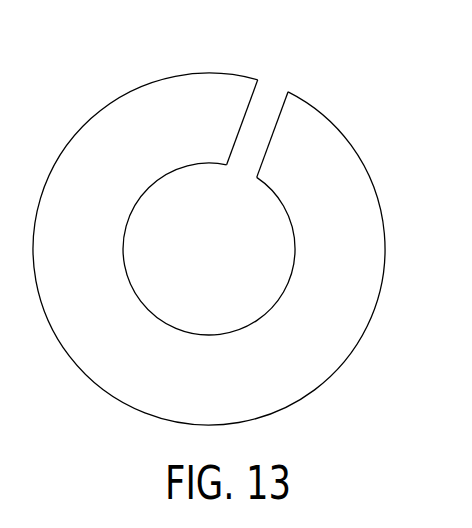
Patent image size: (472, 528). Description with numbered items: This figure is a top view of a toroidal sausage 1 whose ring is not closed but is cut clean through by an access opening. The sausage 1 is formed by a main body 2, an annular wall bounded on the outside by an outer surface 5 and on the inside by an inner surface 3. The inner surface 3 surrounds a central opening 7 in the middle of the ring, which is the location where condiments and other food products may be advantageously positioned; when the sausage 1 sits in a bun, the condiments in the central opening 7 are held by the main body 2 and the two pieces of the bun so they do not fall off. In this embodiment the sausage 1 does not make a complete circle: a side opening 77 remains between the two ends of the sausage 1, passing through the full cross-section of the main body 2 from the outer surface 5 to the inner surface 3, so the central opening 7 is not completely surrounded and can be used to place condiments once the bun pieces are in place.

The toroidal sausage 1 is at (225, 228).
The main body 2 is at (225, 228).
The inner surface 3 is at (296, 248).
The outer surface 5 is at (368, 172).
The central opening 7 is at (231, 249).
The side opening 77 is at (270, 92).